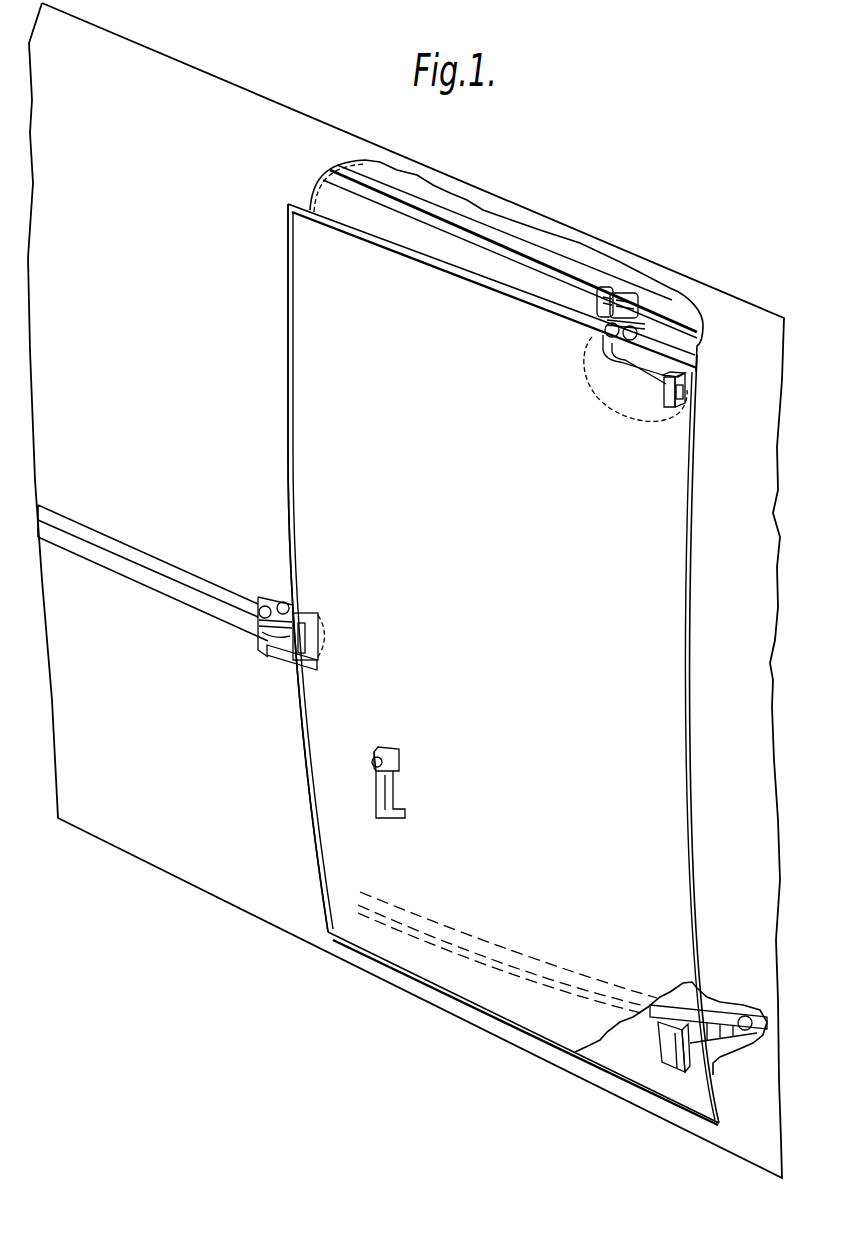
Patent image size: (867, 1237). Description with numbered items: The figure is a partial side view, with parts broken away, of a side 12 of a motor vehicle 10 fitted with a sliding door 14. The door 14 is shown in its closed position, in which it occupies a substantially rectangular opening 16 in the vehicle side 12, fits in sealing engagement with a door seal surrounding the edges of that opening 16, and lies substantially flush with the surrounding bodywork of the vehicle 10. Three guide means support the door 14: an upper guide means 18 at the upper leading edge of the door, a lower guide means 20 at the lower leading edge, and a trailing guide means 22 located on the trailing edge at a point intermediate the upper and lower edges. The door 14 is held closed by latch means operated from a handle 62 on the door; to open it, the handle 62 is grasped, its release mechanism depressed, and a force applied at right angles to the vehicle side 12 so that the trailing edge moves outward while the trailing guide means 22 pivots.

The motor vehicle 10 is at (516, 199).
The side of motor vehicle 12 is at (148, 843).
The sliding door 14 is at (501, 537).
The substantially rectangular opening 16 is at (304, 804).
The upper guide means 18 is at (608, 376).
The lower guide means 20 is at (655, 1070).
The trailing guide means 22 is at (321, 610).
The handle 62 is at (397, 791).